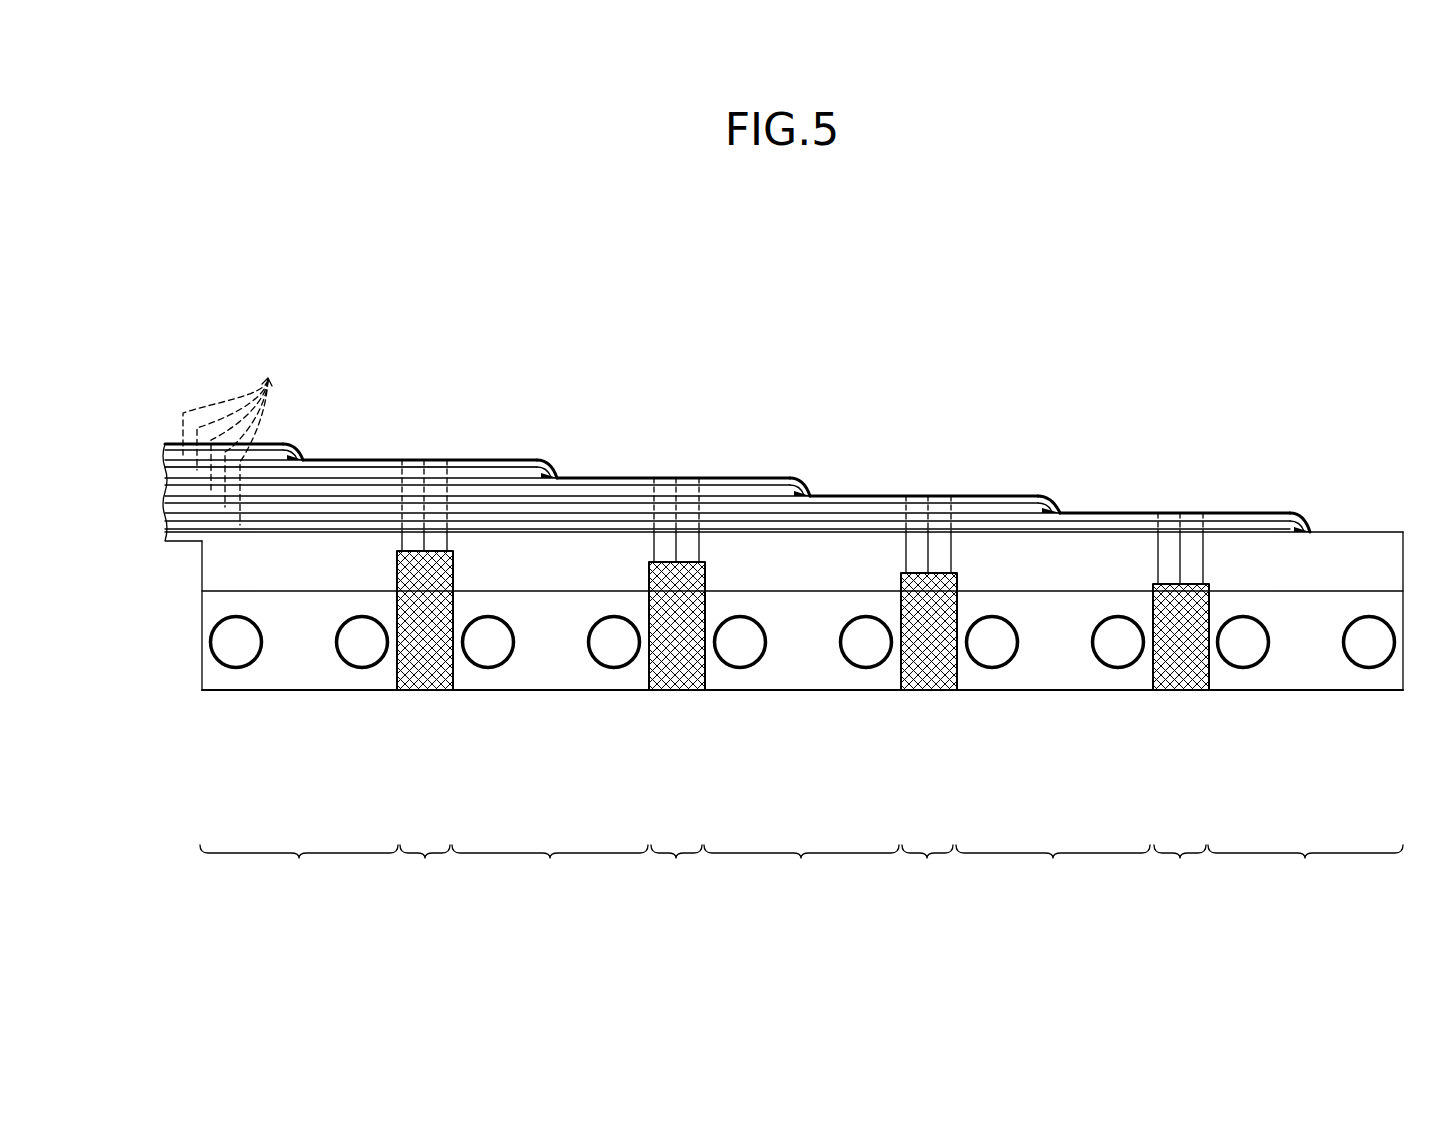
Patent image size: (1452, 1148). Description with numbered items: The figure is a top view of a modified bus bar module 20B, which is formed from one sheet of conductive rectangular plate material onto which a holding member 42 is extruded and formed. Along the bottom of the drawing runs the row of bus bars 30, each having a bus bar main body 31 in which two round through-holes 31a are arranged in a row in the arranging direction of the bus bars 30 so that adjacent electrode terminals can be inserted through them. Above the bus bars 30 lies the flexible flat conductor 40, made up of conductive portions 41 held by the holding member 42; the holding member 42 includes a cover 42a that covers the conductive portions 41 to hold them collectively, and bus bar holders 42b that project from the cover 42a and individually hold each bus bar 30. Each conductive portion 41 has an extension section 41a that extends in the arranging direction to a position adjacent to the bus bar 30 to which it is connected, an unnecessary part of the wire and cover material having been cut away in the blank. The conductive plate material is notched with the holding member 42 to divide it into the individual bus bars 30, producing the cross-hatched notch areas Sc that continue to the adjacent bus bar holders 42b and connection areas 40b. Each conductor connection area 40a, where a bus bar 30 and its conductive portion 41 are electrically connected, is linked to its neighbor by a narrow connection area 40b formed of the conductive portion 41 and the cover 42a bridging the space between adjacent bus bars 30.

The bus bar module 20B is at (613, 237).
The bus bar 30 is at (302, 757).
The bus bar main body 31 is at (287, 692).
The through-hole 31a is at (236, 646).
The notch area Sc is at (423, 692).
The flexible flat conductor 40 is at (732, 378).
The conductive portion 41 is at (235, 438).
The extension section 41a is at (268, 353).
The holding member 42 is at (759, 448).
The cover 42a is at (480, 477).
The bus bar holder 42b is at (297, 562).
The conductor connection area 40a is at (801, 869).
The connection area 40b is at (803, 869).